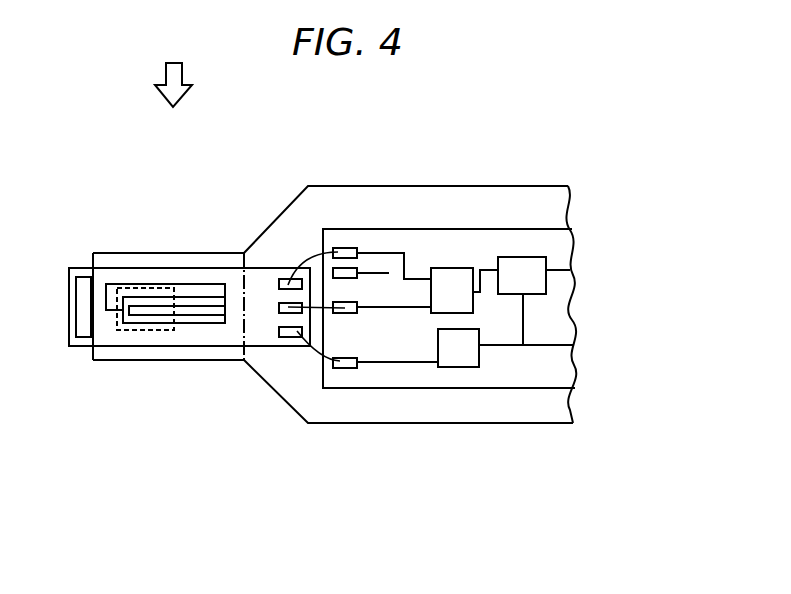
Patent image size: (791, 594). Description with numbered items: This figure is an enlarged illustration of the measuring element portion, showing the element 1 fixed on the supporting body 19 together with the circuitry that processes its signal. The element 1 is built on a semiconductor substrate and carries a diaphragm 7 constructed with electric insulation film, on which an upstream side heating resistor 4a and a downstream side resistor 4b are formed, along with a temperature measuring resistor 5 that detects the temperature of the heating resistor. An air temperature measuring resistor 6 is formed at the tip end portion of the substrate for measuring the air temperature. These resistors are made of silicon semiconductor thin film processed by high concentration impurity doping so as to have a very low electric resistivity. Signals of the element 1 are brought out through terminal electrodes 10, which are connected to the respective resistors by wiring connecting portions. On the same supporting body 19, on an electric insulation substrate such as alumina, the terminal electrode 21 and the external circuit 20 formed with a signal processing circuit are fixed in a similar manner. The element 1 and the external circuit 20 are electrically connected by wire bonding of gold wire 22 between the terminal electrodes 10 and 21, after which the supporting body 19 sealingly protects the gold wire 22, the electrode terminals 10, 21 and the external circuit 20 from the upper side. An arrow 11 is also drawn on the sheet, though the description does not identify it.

The element 1 is at (68, 338).
The upstream side heating resistor 4a is at (138, 298).
The downstream side resistor 4b is at (163, 324).
The temperature measuring resistor 5 is at (141, 312).
The air temperature measuring resistor 6 is at (78, 268).
The diaphragm 7 is at (117, 332).
The terminal electrodes 10 is at (283, 338).
The insertion direction arrow 11 is at (170, 80).
The supporting body 19 is at (485, 217).
The external circuit 20 is at (555, 247).
The terminal electrode 21 is at (352, 249).
The gold wire 22 is at (312, 262).